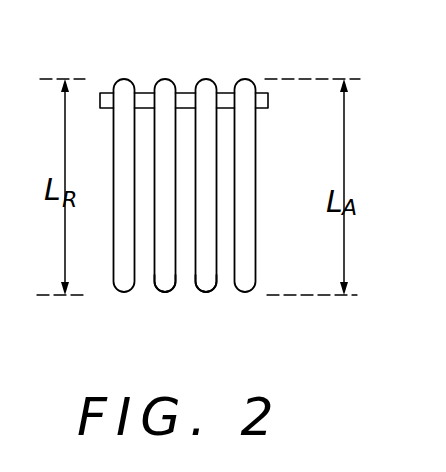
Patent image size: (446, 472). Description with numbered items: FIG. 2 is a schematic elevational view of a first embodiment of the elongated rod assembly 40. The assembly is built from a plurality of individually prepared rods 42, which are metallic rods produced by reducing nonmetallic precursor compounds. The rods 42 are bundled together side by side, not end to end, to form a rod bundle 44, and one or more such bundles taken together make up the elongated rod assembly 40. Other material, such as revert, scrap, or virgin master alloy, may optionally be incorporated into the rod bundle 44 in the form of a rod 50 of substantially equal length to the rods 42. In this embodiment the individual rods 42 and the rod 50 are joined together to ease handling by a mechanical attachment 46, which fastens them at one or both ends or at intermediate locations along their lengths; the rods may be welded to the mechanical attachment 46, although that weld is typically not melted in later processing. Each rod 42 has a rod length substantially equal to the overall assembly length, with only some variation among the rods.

The elongated rod assembly 40 is at (108, 60).
The mechanical attachment 46 is at (145, 92).
The rods 42 is at (203, 178).
The rod 50 is at (164, 290).
The rod bundle 44 is at (206, 302).